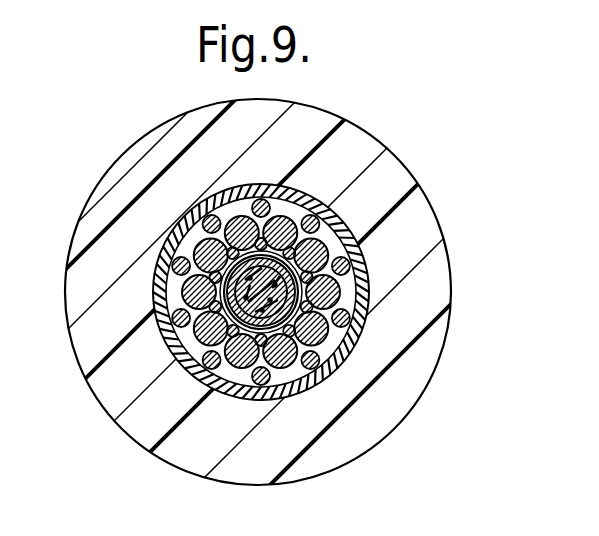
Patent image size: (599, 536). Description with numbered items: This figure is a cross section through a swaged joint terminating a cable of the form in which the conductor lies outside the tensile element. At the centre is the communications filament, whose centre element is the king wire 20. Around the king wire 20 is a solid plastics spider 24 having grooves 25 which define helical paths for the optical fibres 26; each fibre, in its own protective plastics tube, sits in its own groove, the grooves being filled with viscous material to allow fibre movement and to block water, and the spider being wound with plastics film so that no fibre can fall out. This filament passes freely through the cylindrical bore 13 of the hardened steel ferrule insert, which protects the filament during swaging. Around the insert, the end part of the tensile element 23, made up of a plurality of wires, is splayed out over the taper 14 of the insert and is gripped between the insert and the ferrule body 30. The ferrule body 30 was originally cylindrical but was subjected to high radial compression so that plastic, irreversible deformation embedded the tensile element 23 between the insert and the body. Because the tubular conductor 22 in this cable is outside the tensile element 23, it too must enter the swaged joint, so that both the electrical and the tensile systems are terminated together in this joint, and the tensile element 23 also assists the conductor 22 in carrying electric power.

The cylindrical bore 13 is at (215, 259).
The taper 14 is at (170, 348).
The king wire 20 is at (290, 289).
The tubular conductor 22 is at (172, 242).
The tensile element 23 is at (330, 205).
The spider 24 is at (300, 393).
The grooves 25 is at (205, 382).
The optical fibres 26 is at (212, 212).
The ferrule body 30 is at (393, 177).